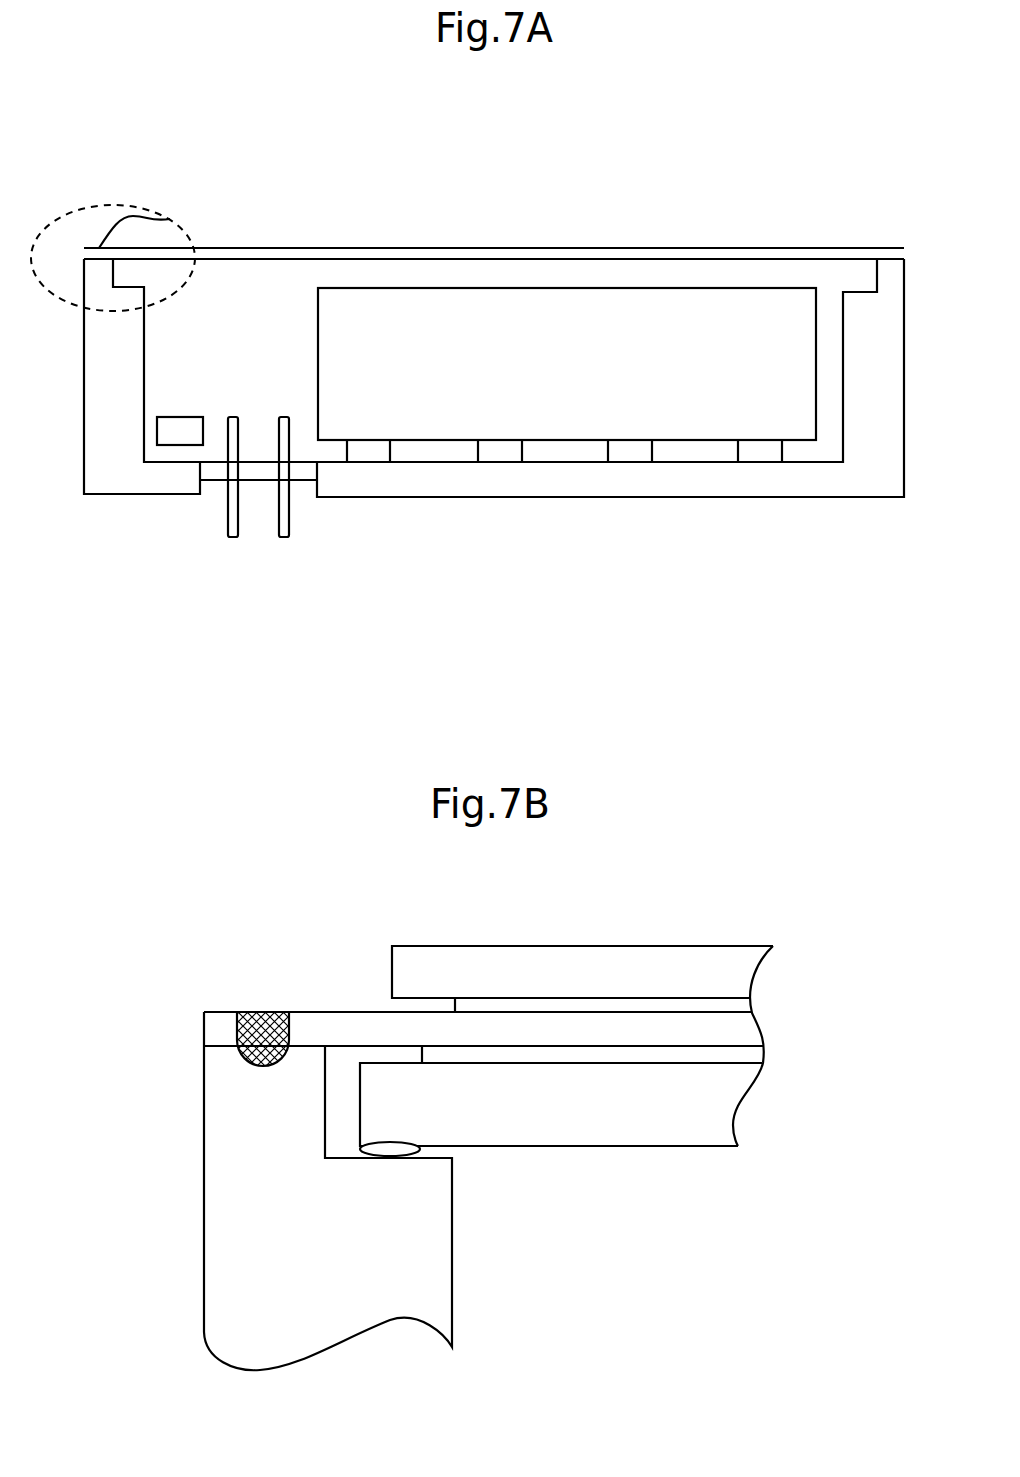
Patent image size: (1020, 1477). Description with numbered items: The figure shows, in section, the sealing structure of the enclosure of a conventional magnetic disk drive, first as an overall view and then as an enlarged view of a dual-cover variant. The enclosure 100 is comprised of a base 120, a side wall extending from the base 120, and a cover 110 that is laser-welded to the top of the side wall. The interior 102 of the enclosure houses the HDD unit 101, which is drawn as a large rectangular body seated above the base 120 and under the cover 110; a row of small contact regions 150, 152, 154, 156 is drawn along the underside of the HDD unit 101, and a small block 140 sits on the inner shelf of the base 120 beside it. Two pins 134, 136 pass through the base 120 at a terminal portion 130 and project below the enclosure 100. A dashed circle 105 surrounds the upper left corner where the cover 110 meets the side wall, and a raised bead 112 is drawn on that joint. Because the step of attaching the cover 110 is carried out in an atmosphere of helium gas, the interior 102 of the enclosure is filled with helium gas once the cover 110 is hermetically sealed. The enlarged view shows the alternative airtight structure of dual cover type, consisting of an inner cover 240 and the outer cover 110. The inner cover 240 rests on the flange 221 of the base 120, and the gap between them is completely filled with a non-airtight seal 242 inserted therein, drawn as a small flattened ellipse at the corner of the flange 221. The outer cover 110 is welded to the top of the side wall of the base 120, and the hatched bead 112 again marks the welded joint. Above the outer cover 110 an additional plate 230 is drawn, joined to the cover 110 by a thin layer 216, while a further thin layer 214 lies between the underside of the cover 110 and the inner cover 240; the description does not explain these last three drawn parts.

In FIG. 7A, the enclosure 100 is at (560, 185).
In FIG. 7A, the HDD unit 101 is at (318, 358).
In FIG. 7A, the interior of the enclosure 102 is at (735, 271).
In FIG. 7A, the enlarged portion 105 is at (98, 206).
In FIG. 7A, the cover 110 is at (425, 248).
In FIG. 7B, the cover 110 is at (342, 1012).
In FIG. 7A, the sealing material 112 is at (168, 218).
In FIG. 7B, the sealing material 112 is at (257, 1012).
In FIG. 7A, the base 120 is at (567, 497).
In FIG. 7B, the base 120 is at (203, 1196).
In FIG. 7A, the terminal portion 130 is at (292, 637).
In FIG. 7A, the terminal pin 134 is at (232, 539).
In FIG. 7A, the terminal pin 136 is at (284, 539).
In FIG. 7A, the circuit element 140 is at (185, 416).
In FIG. 7A, the electrode 150 is at (375, 440).
In FIG. 7A, the electrode 152 is at (502, 440).
In FIG. 7A, the electrode 154 is at (632, 440).
In FIG. 7A, the electrode 156 is at (757, 440).
In FIG. 7B, the adhesive layer 214 is at (764, 1056).
In FIG. 7B, the adhesive layer 216 is at (756, 1005).
In FIG. 7B, the flange 221 is at (340, 1162).
In FIG. 7B, the upper substrate 230 is at (710, 946).
In FIG. 7B, the inner cover 240 is at (678, 1147).
In FIG. 7B, the non-airtight seal 242 is at (425, 1150).